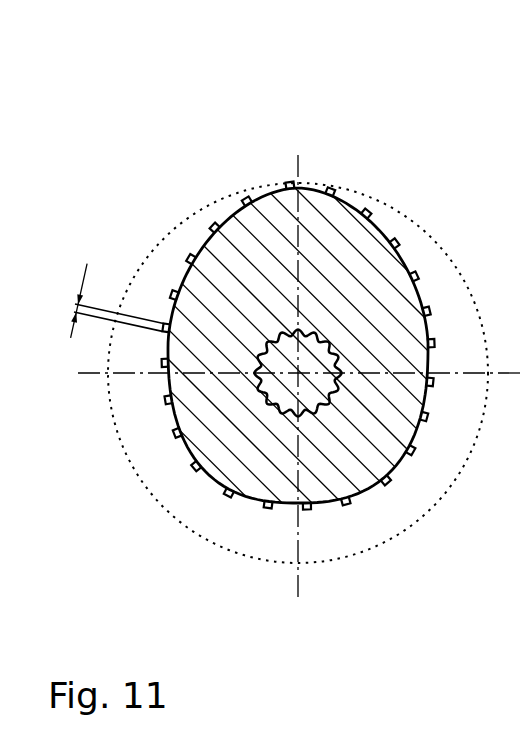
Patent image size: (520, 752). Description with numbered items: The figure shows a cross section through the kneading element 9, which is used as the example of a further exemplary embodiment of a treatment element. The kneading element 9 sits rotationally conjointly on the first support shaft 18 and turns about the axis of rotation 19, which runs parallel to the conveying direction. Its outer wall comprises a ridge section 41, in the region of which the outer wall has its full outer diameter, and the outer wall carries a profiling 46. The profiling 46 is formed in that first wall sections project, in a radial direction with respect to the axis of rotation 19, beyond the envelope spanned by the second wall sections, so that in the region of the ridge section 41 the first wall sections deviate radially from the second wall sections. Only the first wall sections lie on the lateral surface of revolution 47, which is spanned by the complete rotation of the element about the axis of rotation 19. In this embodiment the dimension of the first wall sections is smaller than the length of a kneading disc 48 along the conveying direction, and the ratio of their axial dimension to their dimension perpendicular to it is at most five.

The kneading element 9 is at (458, 173).
The first support shaft 18 is at (305, 393).
The axis of rotation 19 is at (297, 373).
The ridge section 41 is at (330, 190).
The profiling 46 is at (172, 278).
The lateral surface of revolution 47 is at (415, 222).
The kneading disc 48 is at (272, 183).